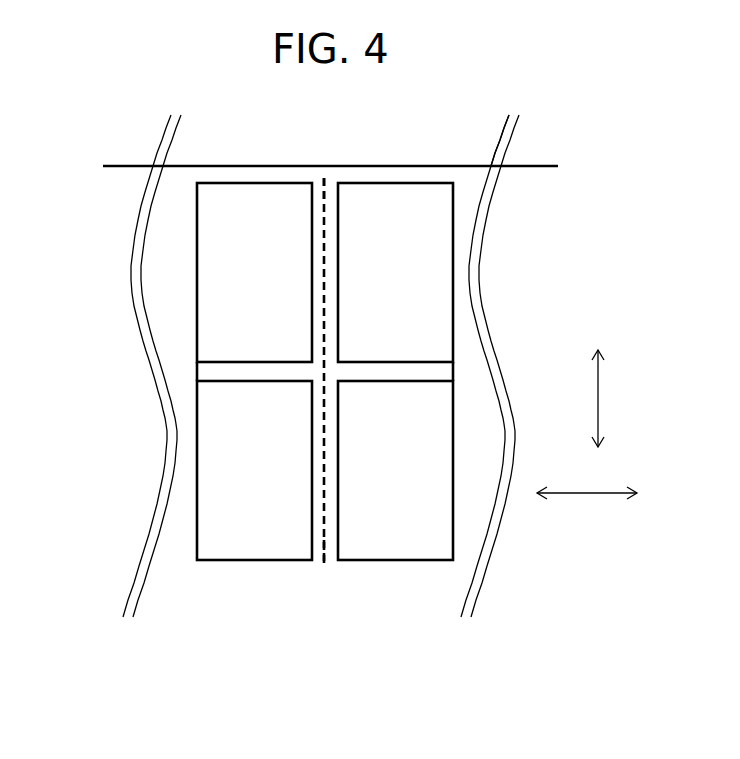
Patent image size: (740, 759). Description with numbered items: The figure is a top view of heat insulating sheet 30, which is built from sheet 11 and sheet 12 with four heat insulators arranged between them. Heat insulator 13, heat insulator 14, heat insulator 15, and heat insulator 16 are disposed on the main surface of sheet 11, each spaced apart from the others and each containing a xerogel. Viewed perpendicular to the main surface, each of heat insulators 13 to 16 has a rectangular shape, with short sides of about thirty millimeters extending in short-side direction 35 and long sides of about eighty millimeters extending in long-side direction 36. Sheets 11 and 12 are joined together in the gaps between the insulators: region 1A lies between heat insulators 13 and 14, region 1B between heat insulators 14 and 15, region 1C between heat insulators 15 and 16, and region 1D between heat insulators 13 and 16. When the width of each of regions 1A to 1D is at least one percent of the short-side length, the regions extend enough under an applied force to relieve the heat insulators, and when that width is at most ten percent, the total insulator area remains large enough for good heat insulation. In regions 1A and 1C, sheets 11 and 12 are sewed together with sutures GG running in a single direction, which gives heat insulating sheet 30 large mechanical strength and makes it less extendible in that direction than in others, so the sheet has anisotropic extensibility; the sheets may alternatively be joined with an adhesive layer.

The sheet 11 is at (457, 585).
The sheet 12 is at (457, 585).
The heat insulator 13 is at (221, 202).
The heat insulator 14 is at (368, 202).
The heat insulator 15 is at (380, 525).
The heat insulator 16 is at (217, 523).
The region 1A is at (330, 198).
The region 1B is at (453, 370).
The region 1C is at (326, 545).
The region 1D is at (200, 372).
The sutures GG is at (322, 240).
The heat insulating sheet 30 is at (525, 125).
The short-side direction 35 is at (578, 492).
The long-side direction 36 is at (600, 389).